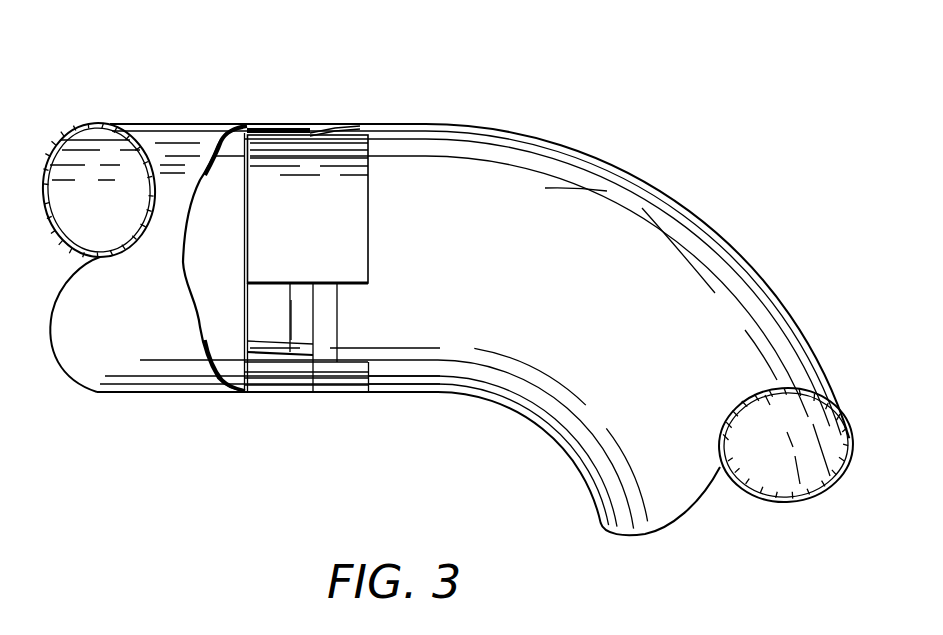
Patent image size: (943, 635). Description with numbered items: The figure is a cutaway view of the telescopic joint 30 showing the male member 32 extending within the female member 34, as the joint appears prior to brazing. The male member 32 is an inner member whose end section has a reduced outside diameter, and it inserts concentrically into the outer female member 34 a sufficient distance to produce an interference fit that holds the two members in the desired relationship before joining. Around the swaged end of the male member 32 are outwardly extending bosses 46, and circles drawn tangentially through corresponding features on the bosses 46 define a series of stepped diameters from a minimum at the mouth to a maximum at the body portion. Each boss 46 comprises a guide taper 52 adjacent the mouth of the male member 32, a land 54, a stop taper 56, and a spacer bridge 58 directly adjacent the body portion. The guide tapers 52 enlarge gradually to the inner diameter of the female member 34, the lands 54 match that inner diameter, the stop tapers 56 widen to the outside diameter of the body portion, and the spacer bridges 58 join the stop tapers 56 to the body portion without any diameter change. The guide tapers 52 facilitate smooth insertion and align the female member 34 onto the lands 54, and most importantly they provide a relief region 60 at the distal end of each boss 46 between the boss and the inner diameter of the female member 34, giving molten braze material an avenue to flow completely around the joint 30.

The telescopic joint 30 is at (308, 262).
The male member 32 is at (472, 146).
The female member 34 is at (178, 146).
The boss 46 is at (337, 123).
The guide taper 52 is at (262, 317).
The land 54 is at (302, 327).
The stop taper 56 is at (323, 348).
The spacer bridge 58 is at (360, 337).
The relief region 60 is at (242, 127).